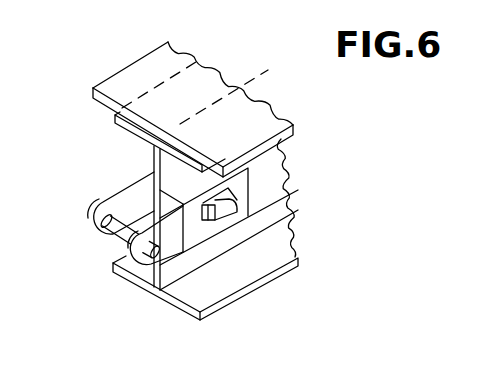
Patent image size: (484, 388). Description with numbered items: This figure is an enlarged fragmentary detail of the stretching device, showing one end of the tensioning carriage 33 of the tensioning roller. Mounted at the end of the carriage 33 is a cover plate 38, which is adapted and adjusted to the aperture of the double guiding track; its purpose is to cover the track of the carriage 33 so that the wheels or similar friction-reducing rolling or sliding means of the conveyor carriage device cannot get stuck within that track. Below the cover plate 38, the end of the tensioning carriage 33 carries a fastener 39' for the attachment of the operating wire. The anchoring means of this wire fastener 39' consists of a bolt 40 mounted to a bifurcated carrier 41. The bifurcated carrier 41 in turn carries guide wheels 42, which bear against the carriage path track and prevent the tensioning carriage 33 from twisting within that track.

The tensioning carriage 33 is at (140, 295).
The cover plate 38 is at (113, 75).
The fastener 39' is at (154, 208).
The bolt 40 is at (125, 245).
The bifurcated carrier 41 is at (130, 206).
The guide wheels 42 is at (206, 221).